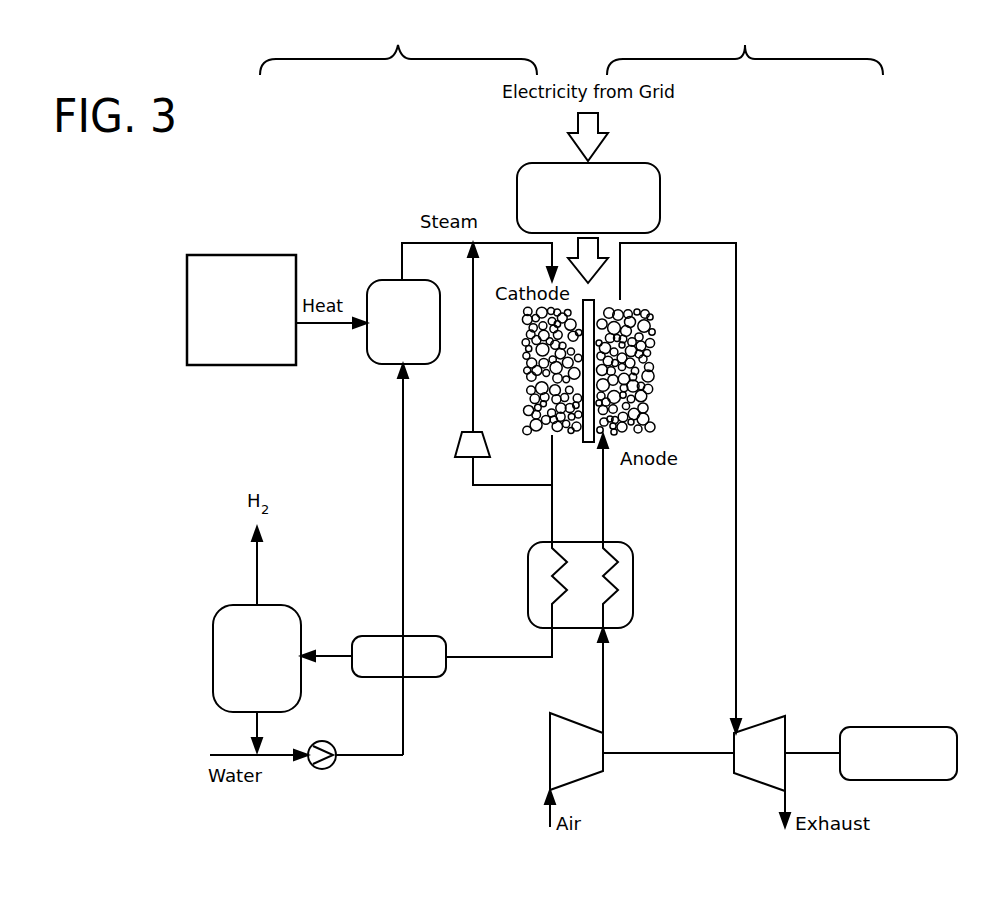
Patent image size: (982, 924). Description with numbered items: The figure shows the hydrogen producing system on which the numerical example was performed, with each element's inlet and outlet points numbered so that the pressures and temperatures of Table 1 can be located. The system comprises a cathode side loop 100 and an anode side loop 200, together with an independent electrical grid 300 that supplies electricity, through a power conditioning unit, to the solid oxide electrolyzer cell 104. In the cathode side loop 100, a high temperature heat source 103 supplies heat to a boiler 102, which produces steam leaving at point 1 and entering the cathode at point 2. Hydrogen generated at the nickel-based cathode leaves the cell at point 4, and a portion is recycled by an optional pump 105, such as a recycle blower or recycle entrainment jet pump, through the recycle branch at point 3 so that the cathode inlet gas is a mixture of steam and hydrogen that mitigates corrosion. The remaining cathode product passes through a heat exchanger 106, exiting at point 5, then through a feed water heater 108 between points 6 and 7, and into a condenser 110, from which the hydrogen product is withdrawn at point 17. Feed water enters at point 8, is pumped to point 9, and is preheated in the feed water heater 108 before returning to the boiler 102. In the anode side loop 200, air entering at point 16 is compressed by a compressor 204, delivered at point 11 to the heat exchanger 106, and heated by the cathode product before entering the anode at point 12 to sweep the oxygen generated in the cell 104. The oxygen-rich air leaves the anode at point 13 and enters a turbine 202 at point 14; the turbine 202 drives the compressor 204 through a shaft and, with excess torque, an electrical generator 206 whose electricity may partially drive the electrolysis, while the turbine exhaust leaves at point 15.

The cathode side loop 100 is at (398, 44).
The anode side loop 200 is at (745, 44).
The independent electrical grid 300 is at (659, 170).
The high temperature heat source 103 is at (222, 255).
The boiler 102 is at (370, 282).
The inlet/outlet point 1 is at (437, 261).
The inlet/outlet point 2 is at (515, 262).
The inlet/outlet point 13 is at (680, 488).
The solid oxide electrolyzer cell 104 is at (589, 445).
The pump 105 is at (459, 458).
The inlet/outlet point 3 is at (512, 470).
The inlet/outlet point 4 is at (563, 488).
The inlet/outlet point 12 is at (618, 488).
The heat exchanger 106 is at (636, 576).
The inlet/outlet point 5 is at (537, 646).
The inlet/outlet point 11 is at (618, 680).
The inlet/outlet point 6 is at (473, 648).
The inlet/outlet point 7 is at (326, 643).
The feed water heater 108 is at (375, 636).
The condenser 110 is at (219, 606).
The inlet/outlet point 17 is at (275, 566).
The inlet/outlet point 8 is at (318, 767).
The inlet/outlet point 9 is at (369, 774).
The inlet/outlet point 16 is at (539, 812).
The compressor 204 is at (549, 734).
The turbine 202 is at (780, 714).
The inlet/outlet point 14 is at (754, 708).
The inlet/outlet point 15 is at (770, 813).
The electrical generator 206 is at (942, 727).